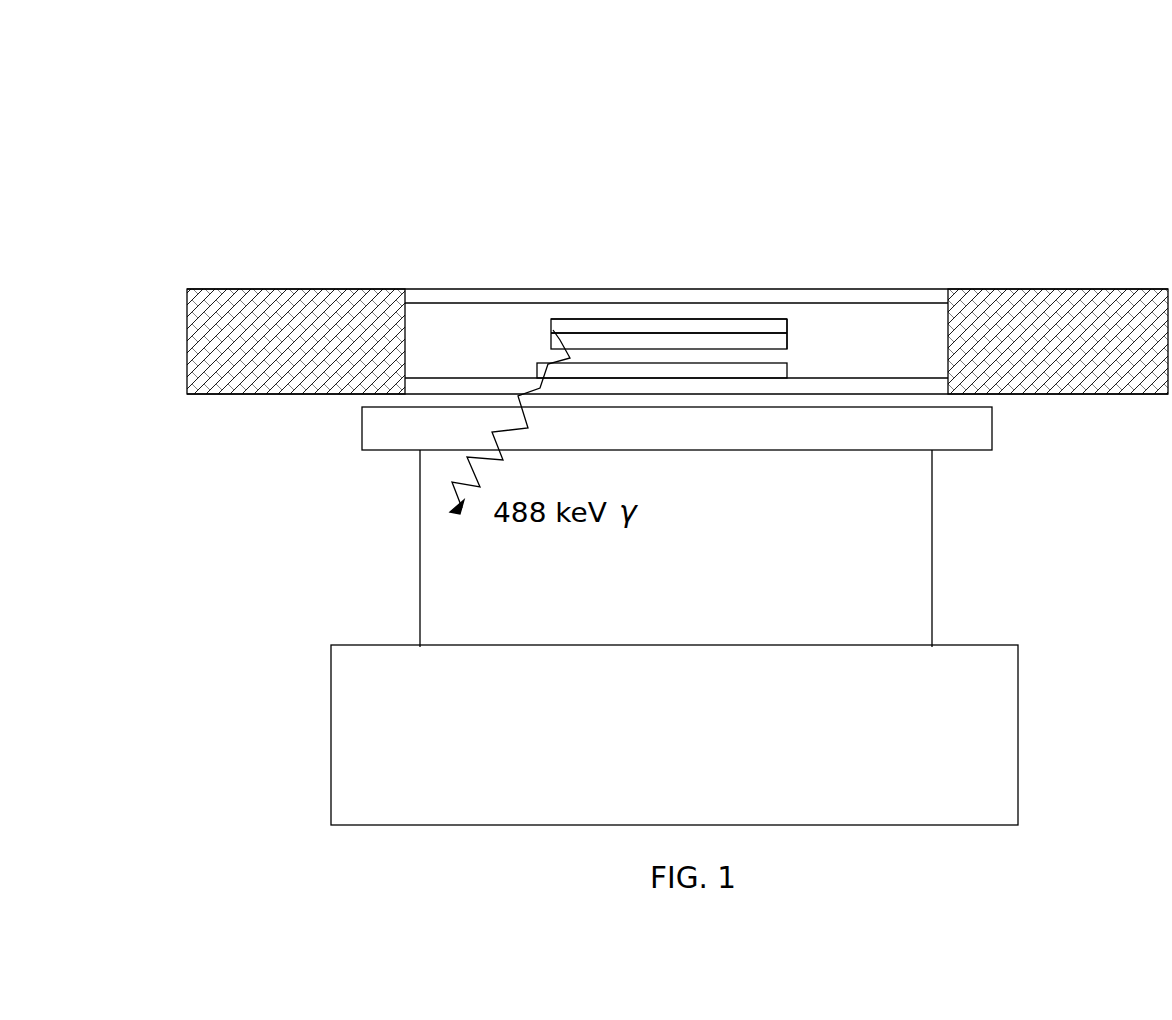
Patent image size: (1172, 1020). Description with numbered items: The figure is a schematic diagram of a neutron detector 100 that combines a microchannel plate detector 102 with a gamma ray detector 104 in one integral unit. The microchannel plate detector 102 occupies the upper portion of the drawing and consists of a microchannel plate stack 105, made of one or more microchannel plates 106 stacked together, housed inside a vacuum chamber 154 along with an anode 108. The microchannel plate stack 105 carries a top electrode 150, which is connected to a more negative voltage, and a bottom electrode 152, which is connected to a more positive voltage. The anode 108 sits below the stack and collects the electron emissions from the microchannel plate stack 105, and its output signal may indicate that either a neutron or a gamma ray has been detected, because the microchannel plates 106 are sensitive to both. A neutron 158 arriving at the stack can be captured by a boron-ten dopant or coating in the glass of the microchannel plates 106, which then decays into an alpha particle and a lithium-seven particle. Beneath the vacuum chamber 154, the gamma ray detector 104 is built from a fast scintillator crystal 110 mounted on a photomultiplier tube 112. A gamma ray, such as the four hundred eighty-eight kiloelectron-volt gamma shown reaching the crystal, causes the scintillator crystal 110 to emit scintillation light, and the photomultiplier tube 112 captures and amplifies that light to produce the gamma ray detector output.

The neutron detector 100 is at (438, 122).
The microchannel plate detector 102 is at (184, 273).
The gamma ray detector 104 is at (300, 458).
The microchannel plate stack 105 is at (788, 316).
The microchannel plates 106 is at (789, 345).
The anode 108 is at (793, 366).
The fast scintillator crystal 110 is at (932, 548).
The photomultiplier tube 112 is at (1018, 726).
The top electrode 150 is at (733, 319).
The bottom electrode 152 is at (683, 344).
The vacuum chamber 154 is at (468, 330).
The neutron 158 is at (592, 331).